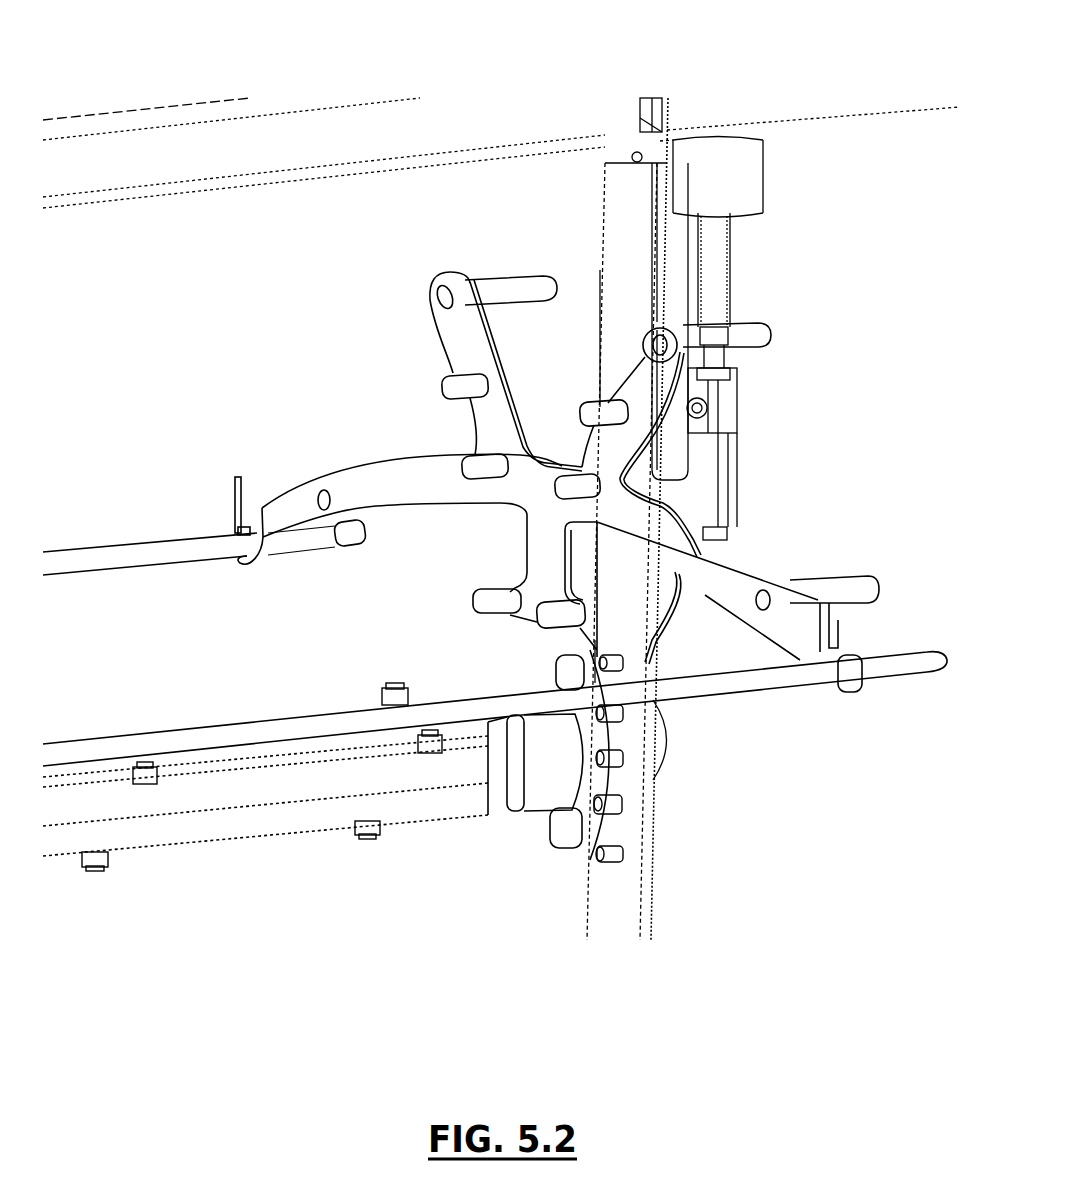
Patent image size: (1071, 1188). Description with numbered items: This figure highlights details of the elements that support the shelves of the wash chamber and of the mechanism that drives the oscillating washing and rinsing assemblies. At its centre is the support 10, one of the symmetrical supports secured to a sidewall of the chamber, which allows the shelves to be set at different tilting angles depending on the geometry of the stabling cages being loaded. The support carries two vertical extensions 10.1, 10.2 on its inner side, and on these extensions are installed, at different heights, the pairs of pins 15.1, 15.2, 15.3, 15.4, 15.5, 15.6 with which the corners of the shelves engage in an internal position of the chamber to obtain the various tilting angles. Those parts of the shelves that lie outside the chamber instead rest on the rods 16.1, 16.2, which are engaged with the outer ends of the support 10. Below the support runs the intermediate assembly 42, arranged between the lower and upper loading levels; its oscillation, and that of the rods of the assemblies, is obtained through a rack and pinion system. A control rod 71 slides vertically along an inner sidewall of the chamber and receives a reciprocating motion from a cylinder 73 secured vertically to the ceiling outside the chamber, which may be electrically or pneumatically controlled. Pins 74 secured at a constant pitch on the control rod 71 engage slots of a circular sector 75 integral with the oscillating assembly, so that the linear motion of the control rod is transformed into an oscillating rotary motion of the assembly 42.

The support 10 is at (388, 480).
The vertical extension 10.1 is at (453, 323).
The vertical extension 10.2 is at (637, 377).
The pin 15.1 is at (493, 597).
The pin 15.2 is at (557, 612).
The pin 15.3 is at (485, 460).
The pin 15.4 is at (585, 482).
The pin 15.5 is at (450, 377).
The pin 15.6 is at (610, 413).
The rod 16.1 is at (180, 545).
The rod 16.2 is at (682, 688).
The intermediate assembly 42 is at (388, 778).
The control rod 71 is at (622, 922).
The cylinder 73 is at (740, 195).
The pin 74 is at (618, 858).
The circular sector 75 is at (557, 820).